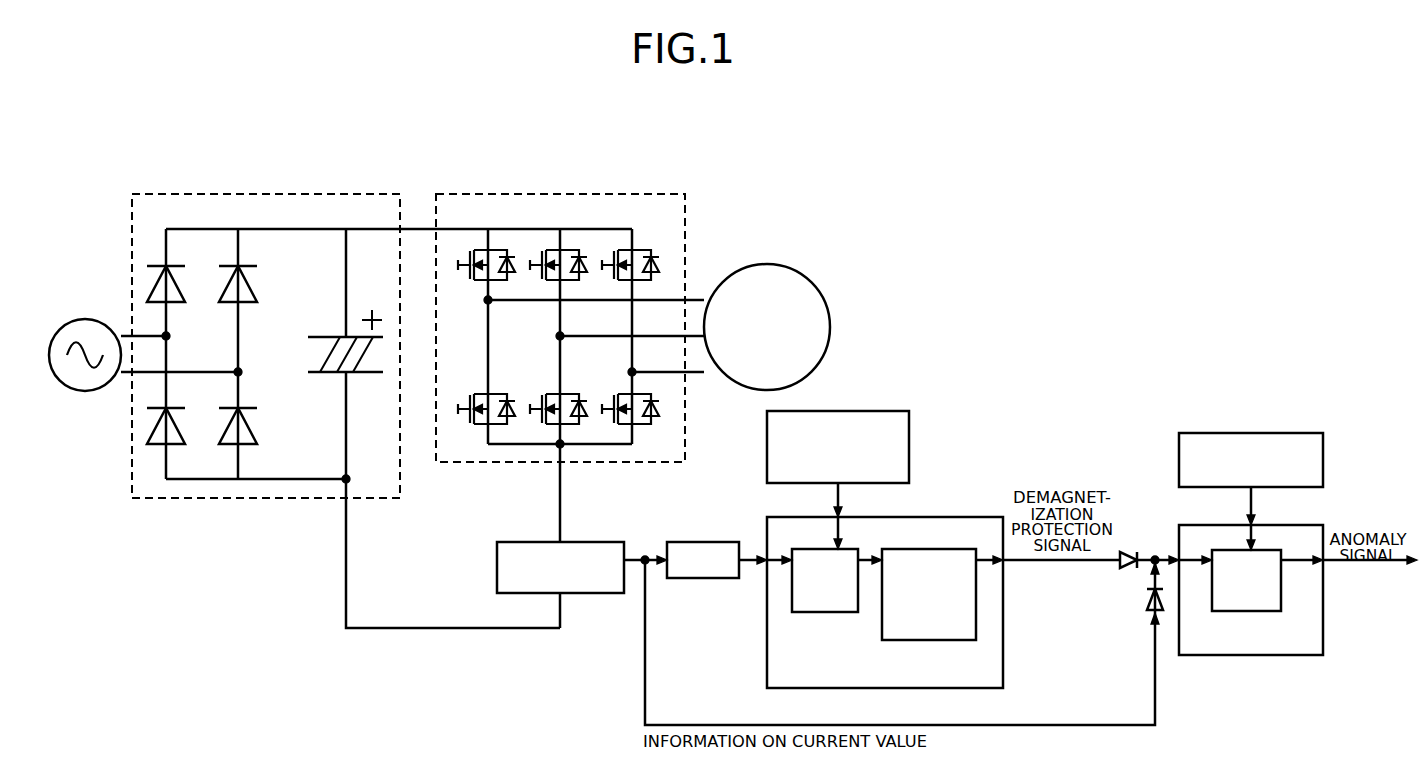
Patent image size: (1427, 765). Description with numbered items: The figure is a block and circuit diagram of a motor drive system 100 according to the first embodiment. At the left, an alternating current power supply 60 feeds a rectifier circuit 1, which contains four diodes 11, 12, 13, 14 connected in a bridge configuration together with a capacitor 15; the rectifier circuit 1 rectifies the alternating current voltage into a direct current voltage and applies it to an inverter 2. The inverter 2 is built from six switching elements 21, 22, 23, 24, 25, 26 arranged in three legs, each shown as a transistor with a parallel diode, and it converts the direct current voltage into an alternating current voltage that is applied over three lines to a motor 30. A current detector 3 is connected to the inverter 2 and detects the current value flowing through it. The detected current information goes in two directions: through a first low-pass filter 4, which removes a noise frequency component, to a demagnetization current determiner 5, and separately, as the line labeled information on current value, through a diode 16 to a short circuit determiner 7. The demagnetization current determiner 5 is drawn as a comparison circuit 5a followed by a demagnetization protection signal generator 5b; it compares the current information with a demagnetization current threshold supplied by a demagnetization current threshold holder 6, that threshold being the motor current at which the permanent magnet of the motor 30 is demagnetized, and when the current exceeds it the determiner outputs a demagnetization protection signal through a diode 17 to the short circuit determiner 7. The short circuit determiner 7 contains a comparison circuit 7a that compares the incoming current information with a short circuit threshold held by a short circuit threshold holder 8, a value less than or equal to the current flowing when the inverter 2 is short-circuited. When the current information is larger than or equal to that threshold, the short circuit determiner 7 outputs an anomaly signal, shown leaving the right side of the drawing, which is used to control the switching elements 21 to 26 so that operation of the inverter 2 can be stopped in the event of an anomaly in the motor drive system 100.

The motor drive system 100 is at (718, 138).
The rectifier circuit 1 is at (354, 194).
The inverter 2 is at (666, 194).
The current detector 3 is at (604, 542).
The first low-pass filter 4 is at (716, 542).
The demagnetization current determiner 5 is at (863, 517).
The comparison circuit 5a is at (803, 612).
The demagnetization protection signal generator 5b is at (882, 630).
The demagnetization current threshold holder 6 is at (863, 411).
The short circuit determiner 7 is at (1279, 525).
The comparison circuit 7a is at (1281, 598).
The short circuit threshold holder 8 is at (1279, 433).
The diode 11 is at (180, 278).
The diode 12 is at (252, 278).
The diode 13 is at (180, 420).
The diode 14 is at (252, 420).
The capacitor 15 is at (328, 337).
The diode 16 is at (1147, 600).
The diode 17 is at (1126, 552).
The switching element 21 is at (500, 249).
The switching element 22 is at (500, 393).
The switching element 23 is at (572, 249).
The switching element 24 is at (572, 393).
The switching element 25 is at (644, 249).
The switching element 26 is at (644, 393).
The motor 30 is at (807, 280).
The alternating current power supply 60 is at (86, 319).